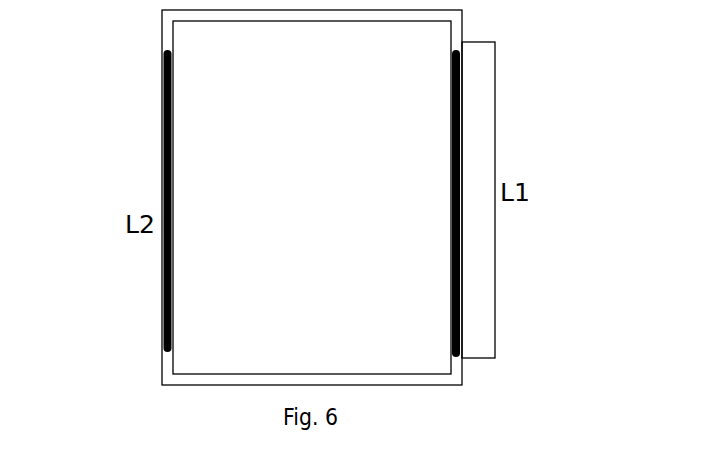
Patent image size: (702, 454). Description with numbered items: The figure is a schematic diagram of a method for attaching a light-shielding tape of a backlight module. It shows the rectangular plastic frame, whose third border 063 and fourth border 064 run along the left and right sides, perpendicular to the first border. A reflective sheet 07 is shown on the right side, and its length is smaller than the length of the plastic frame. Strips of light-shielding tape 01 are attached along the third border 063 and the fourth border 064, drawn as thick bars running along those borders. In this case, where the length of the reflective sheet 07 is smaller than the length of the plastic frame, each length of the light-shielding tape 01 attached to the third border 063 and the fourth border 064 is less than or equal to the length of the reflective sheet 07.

The light-shielding tape 01 is at (459, 275).
The reflective sheet 07 is at (473, 81).
The third border 063 is at (173, 372).
The fourth border 064 is at (376, 199).